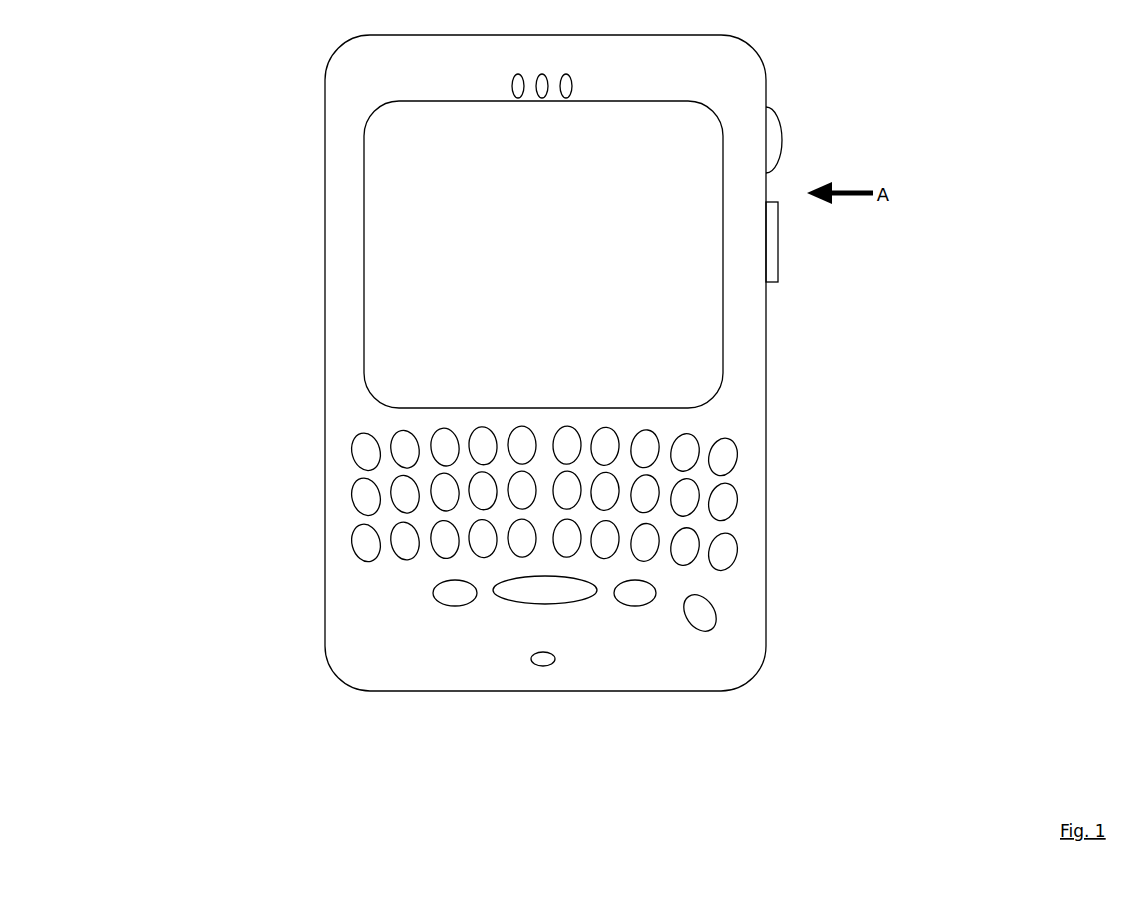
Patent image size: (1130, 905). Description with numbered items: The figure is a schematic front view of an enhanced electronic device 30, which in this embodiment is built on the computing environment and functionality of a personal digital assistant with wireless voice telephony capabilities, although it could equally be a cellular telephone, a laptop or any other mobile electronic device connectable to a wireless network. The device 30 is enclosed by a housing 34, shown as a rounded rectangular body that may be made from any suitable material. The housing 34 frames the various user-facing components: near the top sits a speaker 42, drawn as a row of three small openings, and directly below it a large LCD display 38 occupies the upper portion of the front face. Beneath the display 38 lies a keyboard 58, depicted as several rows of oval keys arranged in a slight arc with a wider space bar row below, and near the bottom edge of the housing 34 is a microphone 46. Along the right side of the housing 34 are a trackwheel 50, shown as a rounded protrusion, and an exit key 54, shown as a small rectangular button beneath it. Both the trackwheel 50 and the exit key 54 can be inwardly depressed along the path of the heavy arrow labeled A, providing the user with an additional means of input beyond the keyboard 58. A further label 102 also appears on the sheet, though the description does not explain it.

The enhanced electronic device 30 is at (603, 402).
The housing 34 is at (326, 473).
The LCD display 38 is at (362, 337).
The speaker 42 is at (505, 77).
The microphone 46 is at (543, 667).
The trackwheel 50 is at (775, 104).
The exit key 54 is at (785, 283).
The keyboard 58 is at (368, 550).
The device label 102 is at (657, 773).